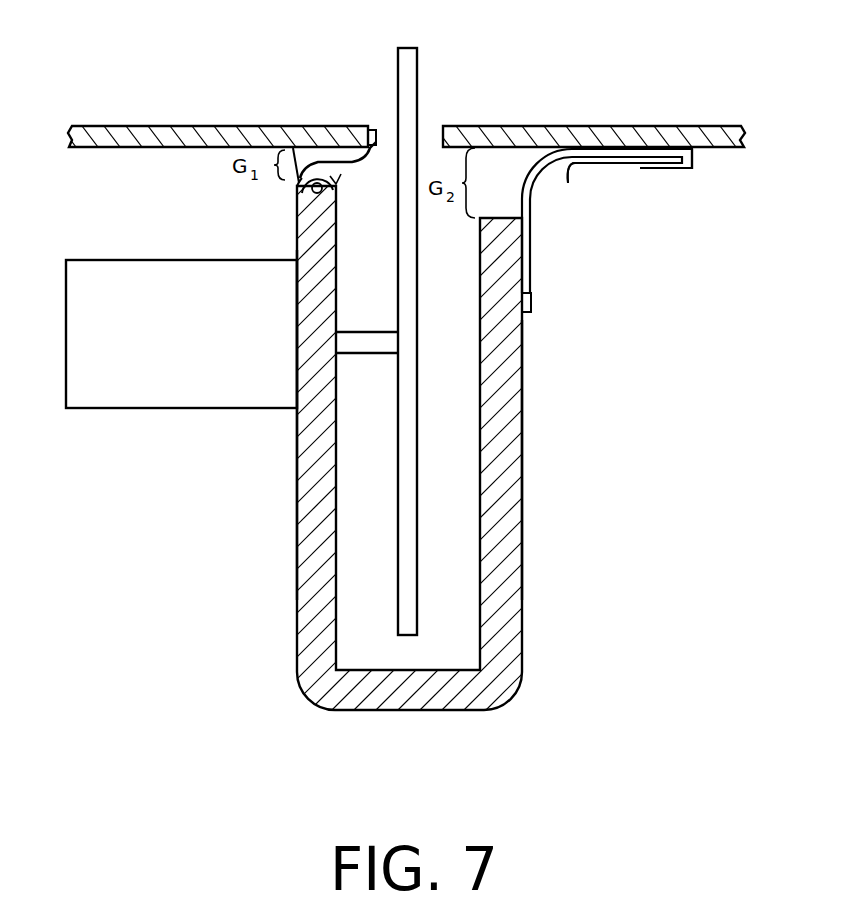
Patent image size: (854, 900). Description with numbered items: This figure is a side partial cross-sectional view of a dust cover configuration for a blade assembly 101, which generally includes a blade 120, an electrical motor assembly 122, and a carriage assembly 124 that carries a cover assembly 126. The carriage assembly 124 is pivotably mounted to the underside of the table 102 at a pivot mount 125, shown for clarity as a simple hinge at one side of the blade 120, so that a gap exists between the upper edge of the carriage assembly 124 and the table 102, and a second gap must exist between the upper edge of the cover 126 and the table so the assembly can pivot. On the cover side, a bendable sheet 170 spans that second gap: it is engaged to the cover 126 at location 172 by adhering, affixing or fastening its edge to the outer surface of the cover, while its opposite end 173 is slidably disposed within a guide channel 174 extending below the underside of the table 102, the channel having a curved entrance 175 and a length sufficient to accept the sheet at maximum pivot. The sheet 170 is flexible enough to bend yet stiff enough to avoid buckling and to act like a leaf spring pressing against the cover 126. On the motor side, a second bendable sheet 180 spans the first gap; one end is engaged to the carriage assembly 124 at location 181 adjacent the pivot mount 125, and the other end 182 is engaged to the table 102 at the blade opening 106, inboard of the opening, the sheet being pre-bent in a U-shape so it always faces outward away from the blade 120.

The blade assembly 101 is at (532, 578).
The table 102 is at (613, 132).
The blade opening 106 is at (443, 137).
The blade 120 is at (407, 72).
The electrical motor assembly 122 is at (158, 388).
The carriage assembly 124 is at (322, 543).
The pivot mount 125 is at (297, 186).
The cover assembly 126 is at (510, 487).
The bendable sheet 170 is at (538, 200).
The location 172 is at (533, 305).
The opposite end 173 is at (615, 157).
The guide channel 174 is at (643, 167).
The curved entrance 175 is at (576, 183).
The bendable sheet 180 is at (352, 153).
The location 181 is at (328, 196).
The other end 182 is at (377, 140).